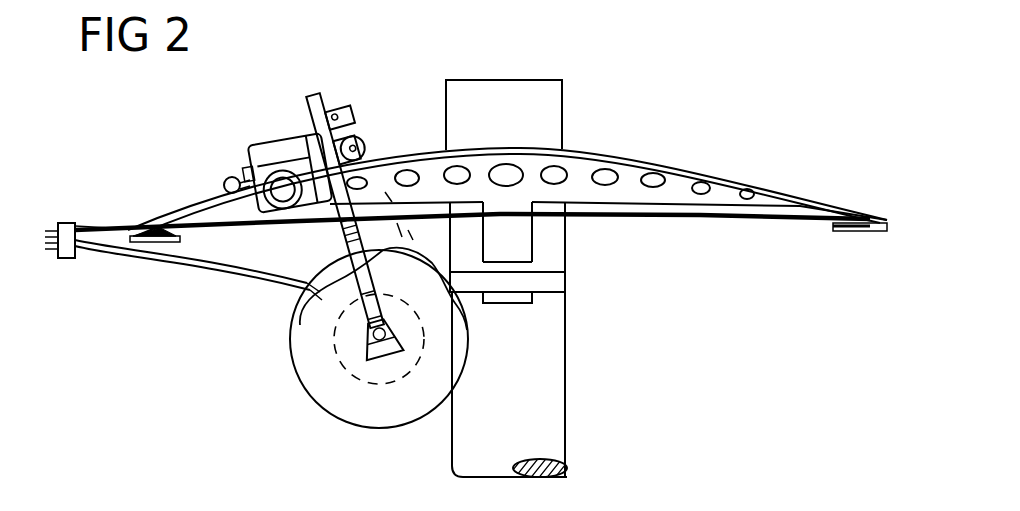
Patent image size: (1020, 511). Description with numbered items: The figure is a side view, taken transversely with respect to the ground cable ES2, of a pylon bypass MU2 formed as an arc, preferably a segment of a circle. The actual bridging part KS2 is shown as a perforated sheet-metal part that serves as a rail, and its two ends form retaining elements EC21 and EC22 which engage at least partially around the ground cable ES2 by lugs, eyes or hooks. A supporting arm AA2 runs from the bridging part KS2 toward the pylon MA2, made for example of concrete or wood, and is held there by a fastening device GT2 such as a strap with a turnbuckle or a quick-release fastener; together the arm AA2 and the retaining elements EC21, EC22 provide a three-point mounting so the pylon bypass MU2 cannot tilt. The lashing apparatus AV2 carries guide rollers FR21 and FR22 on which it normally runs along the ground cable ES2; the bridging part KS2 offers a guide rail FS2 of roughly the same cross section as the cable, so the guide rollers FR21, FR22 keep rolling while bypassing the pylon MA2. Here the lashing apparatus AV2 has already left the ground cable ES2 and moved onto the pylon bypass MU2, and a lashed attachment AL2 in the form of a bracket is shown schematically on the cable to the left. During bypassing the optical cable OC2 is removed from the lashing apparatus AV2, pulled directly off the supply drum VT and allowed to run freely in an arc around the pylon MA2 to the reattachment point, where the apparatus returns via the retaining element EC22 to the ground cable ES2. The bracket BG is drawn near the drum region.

The lashing apparatus AV2 is at (273, 126).
The guide roller FR21 is at (362, 125).
The guide roller FR22 is at (229, 176).
The ground cable ES2 is at (100, 223).
The retaining element EC21 is at (147, 226).
The retaining element EC22 is at (853, 233).
The bridging part KS2 is at (583, 168).
The pylon bypass MU2 is at (668, 146).
The guide rail FS2 is at (736, 176).
The arm AA2 is at (550, 239).
The fastening device GT2 is at (557, 283).
The optical cable OC2 is at (203, 262).
The pylon MA2 is at (555, 423).
The supply drum VT is at (353, 407).
The bracket BG is at (291, 328).
The lashed attachment AL2 is at (67, 259).